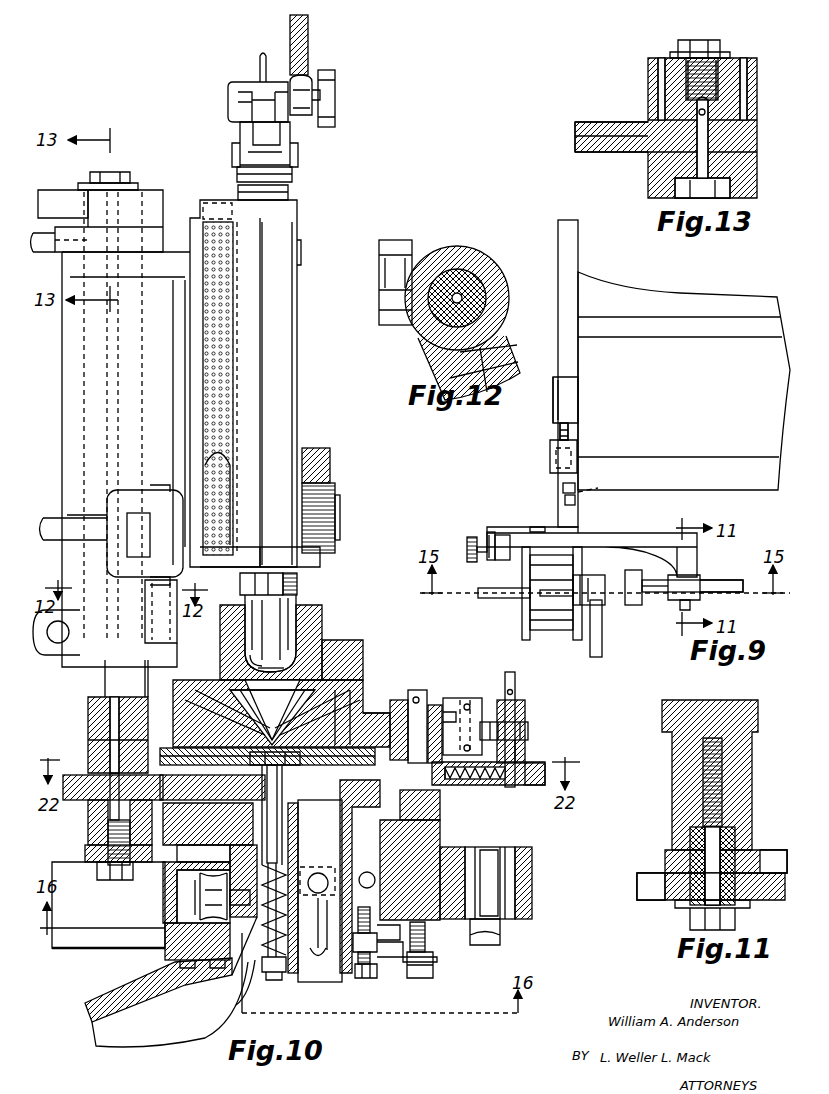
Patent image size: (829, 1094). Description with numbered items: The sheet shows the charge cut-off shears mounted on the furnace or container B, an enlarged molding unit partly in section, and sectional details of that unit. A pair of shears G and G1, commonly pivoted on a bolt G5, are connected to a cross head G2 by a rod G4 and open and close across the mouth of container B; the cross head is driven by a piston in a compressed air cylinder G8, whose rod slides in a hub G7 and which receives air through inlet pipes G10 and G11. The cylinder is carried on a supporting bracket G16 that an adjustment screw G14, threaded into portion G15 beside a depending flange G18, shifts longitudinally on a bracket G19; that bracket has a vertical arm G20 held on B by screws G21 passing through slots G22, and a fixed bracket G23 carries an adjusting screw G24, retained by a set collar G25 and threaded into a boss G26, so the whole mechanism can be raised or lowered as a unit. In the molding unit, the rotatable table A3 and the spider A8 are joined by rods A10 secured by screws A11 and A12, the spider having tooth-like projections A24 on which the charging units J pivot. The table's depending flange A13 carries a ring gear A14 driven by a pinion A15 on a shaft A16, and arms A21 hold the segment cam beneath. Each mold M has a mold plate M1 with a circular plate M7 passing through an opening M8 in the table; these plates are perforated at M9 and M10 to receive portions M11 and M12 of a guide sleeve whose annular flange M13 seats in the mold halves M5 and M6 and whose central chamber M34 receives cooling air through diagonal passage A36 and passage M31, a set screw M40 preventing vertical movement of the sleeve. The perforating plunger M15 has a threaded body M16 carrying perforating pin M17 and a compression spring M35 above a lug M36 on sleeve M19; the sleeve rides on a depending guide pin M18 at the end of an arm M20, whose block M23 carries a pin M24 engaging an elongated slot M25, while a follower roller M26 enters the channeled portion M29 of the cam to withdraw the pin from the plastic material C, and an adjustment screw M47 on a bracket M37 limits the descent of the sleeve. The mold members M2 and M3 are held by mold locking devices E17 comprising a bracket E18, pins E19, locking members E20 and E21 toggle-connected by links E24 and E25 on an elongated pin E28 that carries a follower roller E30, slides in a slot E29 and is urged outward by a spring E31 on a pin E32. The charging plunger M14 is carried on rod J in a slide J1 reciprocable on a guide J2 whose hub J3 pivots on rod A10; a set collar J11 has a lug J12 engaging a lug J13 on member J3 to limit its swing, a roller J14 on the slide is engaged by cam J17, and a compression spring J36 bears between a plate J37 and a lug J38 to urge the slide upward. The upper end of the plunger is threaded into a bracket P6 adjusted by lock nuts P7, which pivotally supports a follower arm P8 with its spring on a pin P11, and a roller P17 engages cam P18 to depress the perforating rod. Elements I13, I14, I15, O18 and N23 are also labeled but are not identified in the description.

In FIG. 10, the cam P18 is at (309, 32).
In FIG. 10, the pin P11 is at (262, 55).
In FIG. 10, the follower arm P8 is at (258, 85).
In FIG. 10, the roller P17 is at (326, 78).
In FIG. 10, the bracket P6 is at (272, 155).
In FIG. 10, the lock nuts P7 is at (292, 190).
In FIG. 10, the guide J2 is at (245, 358).
In FIG. 10, the slide J1 is at (285, 395).
In FIG. 10, the lug J38 is at (218, 200).
In FIG. 10, the compression spring J36 is at (200, 340).
In FIG. 10, the cam J17 is at (325, 450).
In FIG. 10, the roller J14 is at (325, 495).
In FIG. 10, the rod J is at (300, 565).
In FIG. 10, the hub J3 is at (128, 386).
In FIG. 13, the hub J3 is at (650, 168).
In FIG. 10, the plate J37 is at (205, 553).
In FIG. 10, the lug J12 is at (161, 611).
In FIG. 12, the lug J12 is at (442, 375).
In FIG. 10, the set collar J11 is at (70, 632).
In FIG. 12, the set collar J11 is at (507, 310).
In FIG. 12, the lug J13 is at (425, 355).
In FIG. 10, the screw A11 is at (112, 175).
In FIG. 13, the screw A11 is at (712, 56).
In FIG. 10, the spider A8 is at (145, 185).
In FIG. 13, the spider A8 is at (650, 66).
In FIG. 10, the tooth-like projections A24 is at (150, 207).
In FIG. 10, the pin I13 is at (46, 246).
In FIG. 13, the pin I13 is at (745, 80).
In FIG. 10, the bushing I14 is at (105, 700).
In FIG. 12, the bushing I14 is at (478, 270).
In FIG. 13, the bushing I14 is at (748, 105).
In FIG. 10, the spring I15 is at (115, 822).
In FIG. 10, the rod A10 is at (118, 721).
In FIG. 12, the rod A10 is at (468, 260).
In FIG. 13, the rod A10 is at (720, 160).
In FIG. 10, the rotatable table A3 is at (105, 790).
In FIG. 10, the diagonal passage A36 is at (145, 835).
In FIG. 10, the screw A12 is at (125, 882).
In FIG. 10, the arms A21 is at (140, 978).
In FIG. 10, the peripheral flange A13 is at (440, 852).
In FIG. 10, the ring gear A14 is at (482, 860).
In FIG. 10, the pinion A15 is at (500, 847).
In FIG. 10, the shaft A16 is at (524, 862).
In FIG. 10, the mold member M5 is at (240, 608).
In FIG. 10, the perforating pin M17 is at (270, 633).
In FIG. 10, the mold M is at (218, 630).
In FIG. 10, the mold member M6 is at (250, 656).
In FIG. 10, the charging plunger M14 is at (262, 656).
In FIG. 10, the mold member M3 is at (333, 660).
In FIG. 10, the central chamber M34 is at (312, 612).
In FIG. 10, the annular flange M13 is at (345, 665).
In FIG. 10, the guide sleeve portion M11 is at (355, 690).
In FIG. 10, the guide sleeve portion M12 is at (370, 700).
In FIG. 10, the threaded body M16 is at (376, 720).
In FIG. 10, the mold plate M1 is at (160, 760).
In FIG. 10, the perforation M9 is at (250, 758).
In FIG. 10, the circular opening M8 is at (255, 745).
In FIG. 10, the plastic material C is at (200, 720).
In FIG. 10, the mold member M2 is at (130, 725).
In FIG. 10, the passage M31 is at (125, 745).
In FIG. 10, the arm M20 is at (112, 878).
In FIG. 10, the perforation M10 is at (180, 860).
In FIG. 10, the circular plate M7 is at (170, 870).
In FIG. 10, the channeled portion M29 is at (200, 880).
In FIG. 10, the follower roller M26 is at (178, 935).
In FIG. 10, the compression spring M35 is at (242, 870).
In FIG. 10, the lug M36 is at (240, 925).
In FIG. 10, the pin M24 is at (276, 980).
In FIG. 10, the elongated slot M25 is at (330, 975).
In FIG. 10, the perforating plunger M15 is at (270, 852).
In FIG. 10, the set screw M40 is at (334, 876).
In FIG. 10, the block M23 is at (380, 880).
In FIG. 10, the bracket M37 is at (378, 918).
In FIG. 10, the guide pin M18 is at (362, 980).
In FIG. 10, the sleeve M19 is at (400, 975).
In FIG. 10, the adjustment screw M47 is at (434, 978).
In FIG. 10, the fitting O18 is at (440, 978).
In FIG. 10, the pin E19 is at (420, 692).
In FIG. 10, the mold locking device E17 is at (440, 700).
In FIG. 10, the mold locking member E21 is at (434, 718).
In FIG. 10, the mold locking member E20 is at (460, 725).
In FIG. 10, the link E24 is at (500, 725).
In FIG. 10, the elongated pin E28 is at (516, 678).
In FIG. 10, the link E25 is at (522, 738).
In FIG. 10, the follower roller E30 is at (525, 750).
In FIG. 10, the pin E32 is at (530, 770).
In FIG. 10, the bracket E18 is at (546, 774).
In FIG. 10, the slot E29 is at (500, 780).
In FIG. 10, the spring E31 is at (455, 779).
In FIG. 9, the furnace or container B is at (684, 381).
In FIG. 9, the supporting bracket G16 is at (622, 540).
In FIG. 11, the supporting bracket G16 is at (735, 778).
In FIG. 9, the set collar G25 is at (560, 420).
In FIG. 9, the fixed bracket G23 is at (580, 400).
In FIG. 9, the adjusting screw G24 is at (568, 430).
In FIG. 9, the boss G26 is at (575, 455).
In FIG. 9, the vertical arm G20 is at (577, 482).
In FIG. 9, the screw G21 is at (578, 492).
In FIG. 9, the slot G22 is at (598, 488).
In FIG. 9, the bracket G19 is at (505, 535).
In FIG. 9, the flange G18 is at (490, 535).
In FIG. 9, the portion G15 is at (508, 545).
In FIG. 9, the adjustment screw G14 is at (474, 538).
In FIG. 9, the compressed air cylinder G8 is at (552, 593).
In FIG. 9, the inlet pipe G10 is at (499, 590).
In FIG. 9, the inlet pipe G11 is at (545, 596).
In FIG. 9, the hub G7 is at (592, 585).
In FIG. 9, the cross head G2 is at (638, 590).
In FIG. 9, the shear G1 is at (725, 580).
In FIG. 11, the shear G1 is at (772, 852).
In FIG. 9, the rod G4 is at (656, 594).
In FIG. 9, the bolt G5 is at (685, 608).
In FIG. 11, the bolt G5 is at (692, 908).
In FIG. 9, the shear G is at (730, 595).
In FIG. 11, the shear G is at (668, 890).
In FIG. 9, the bar N23 is at (600, 640).